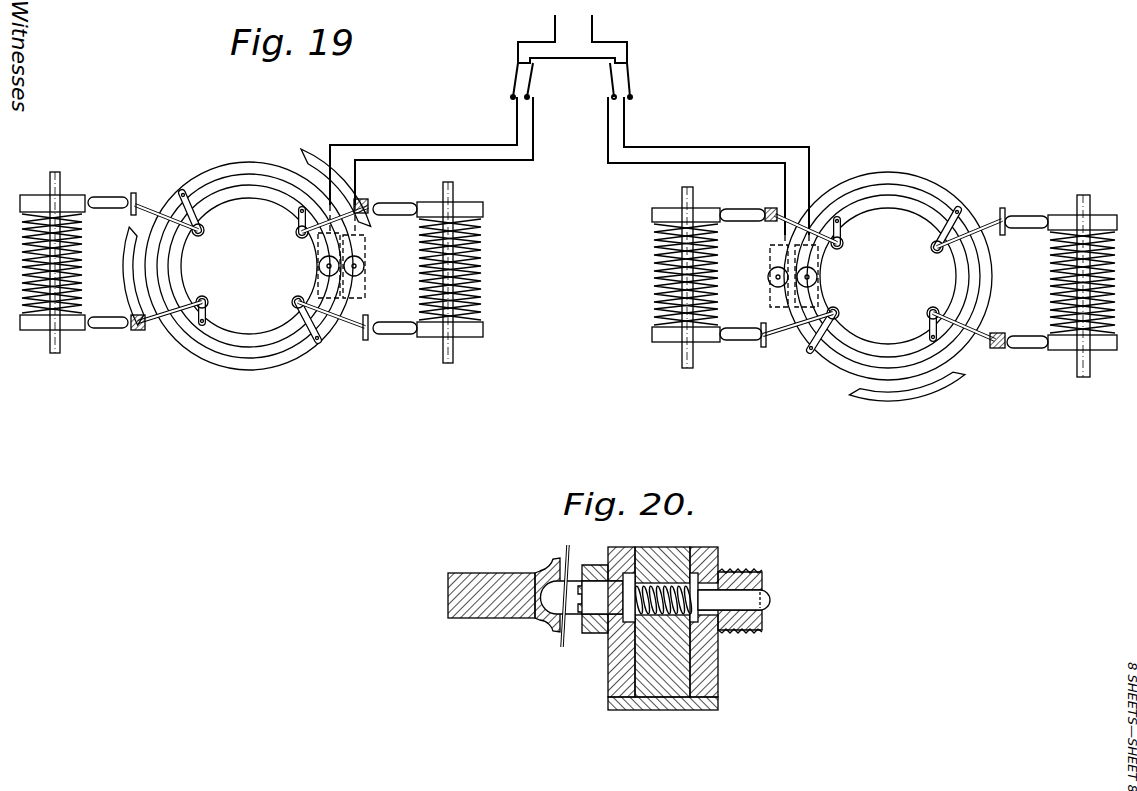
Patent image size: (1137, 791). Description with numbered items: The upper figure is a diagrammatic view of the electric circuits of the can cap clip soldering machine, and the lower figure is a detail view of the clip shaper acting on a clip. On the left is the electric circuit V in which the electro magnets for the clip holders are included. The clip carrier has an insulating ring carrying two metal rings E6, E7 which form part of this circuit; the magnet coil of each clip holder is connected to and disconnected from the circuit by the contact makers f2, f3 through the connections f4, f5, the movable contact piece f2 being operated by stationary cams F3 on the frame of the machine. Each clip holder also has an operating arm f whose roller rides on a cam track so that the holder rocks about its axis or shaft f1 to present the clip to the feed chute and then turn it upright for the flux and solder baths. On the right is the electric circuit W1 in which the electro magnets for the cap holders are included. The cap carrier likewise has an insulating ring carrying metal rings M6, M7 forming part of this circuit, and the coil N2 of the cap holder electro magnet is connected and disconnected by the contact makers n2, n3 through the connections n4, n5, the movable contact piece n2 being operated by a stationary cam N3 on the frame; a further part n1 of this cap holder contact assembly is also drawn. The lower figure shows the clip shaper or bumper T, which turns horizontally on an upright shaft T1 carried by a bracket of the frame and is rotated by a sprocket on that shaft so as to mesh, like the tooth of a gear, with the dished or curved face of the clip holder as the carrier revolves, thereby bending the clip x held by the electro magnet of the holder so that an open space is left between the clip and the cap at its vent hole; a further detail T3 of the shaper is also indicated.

In FIG. 19, the electric circuit V is at (247, 160).
In FIG. 19, the metal ring E6 is at (264, 161).
In FIG. 19, the metal ring E7 is at (253, 318).
In FIG. 19, the stationary cam F3 is at (317, 150).
In FIG. 19, the operating arm f is at (54, 172).
In FIG. 19, the axis or shaft f1 is at (454, 349).
In FIG. 19, the movable contact piece f2 is at (30, 257).
In FIG. 19, the contact maker f3 is at (143, 193).
In FIG. 19, the connection f4 is at (105, 333).
In FIG. 19, the connection f5 is at (107, 194).
In FIG. 19, the electric circuit W1 is at (798, 152).
In FIG. 19, the metal ring M6 is at (930, 184).
In FIG. 19, the metal ring M7 is at (885, 326).
In FIG. 19, the coil N2 is at (686, 258).
In FIG. 19, the stationary cam N3 is at (914, 404).
In FIG. 19, the spring rod n1 is at (686, 369).
In FIG. 19, the movable contact piece n2 is at (765, 222).
In FIG. 19, the contact maker n3 is at (764, 350).
In FIG. 19, the connection n4 is at (735, 207).
In FIG. 19, the connection n5 is at (733, 345).
In FIG. 20, the clip shaper or bumper T is at (478, 585).
In FIG. 20, the upright shaft T1 is at (670, 558).
In FIG. 20, the flange T3 is at (530, 622).
In FIG. 20, the clip x is at (561, 640).